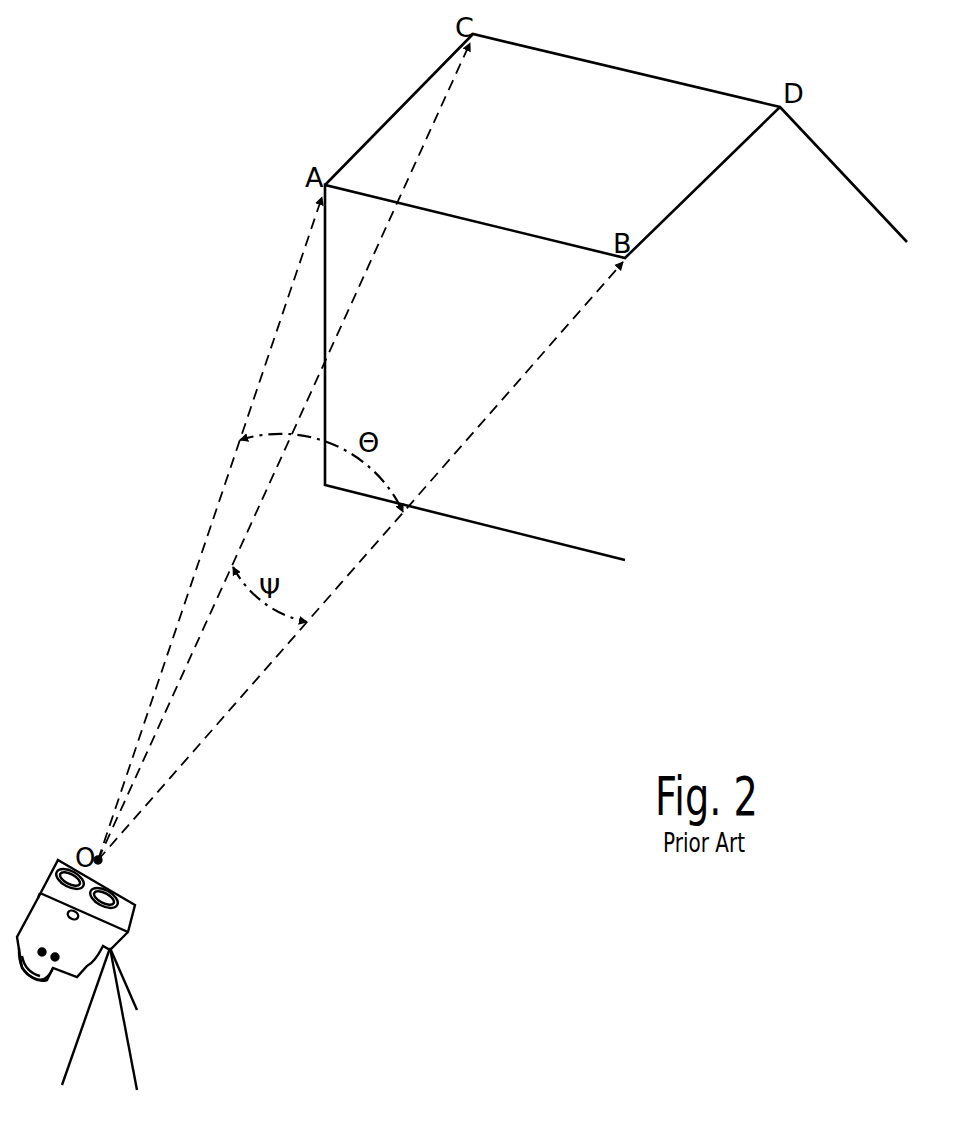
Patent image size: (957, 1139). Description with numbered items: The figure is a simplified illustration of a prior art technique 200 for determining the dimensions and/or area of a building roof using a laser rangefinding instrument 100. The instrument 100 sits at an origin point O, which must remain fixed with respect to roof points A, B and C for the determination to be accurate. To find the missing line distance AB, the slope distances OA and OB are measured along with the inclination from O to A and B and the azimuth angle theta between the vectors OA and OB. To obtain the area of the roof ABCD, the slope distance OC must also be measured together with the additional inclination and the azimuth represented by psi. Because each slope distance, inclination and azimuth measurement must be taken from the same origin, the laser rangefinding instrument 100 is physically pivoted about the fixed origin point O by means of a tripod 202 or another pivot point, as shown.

The laser rangefinding instrument 100 is at (152, 934).
The tripod 202 is at (130, 1038).
The prior art technique 200 is at (514, 675).